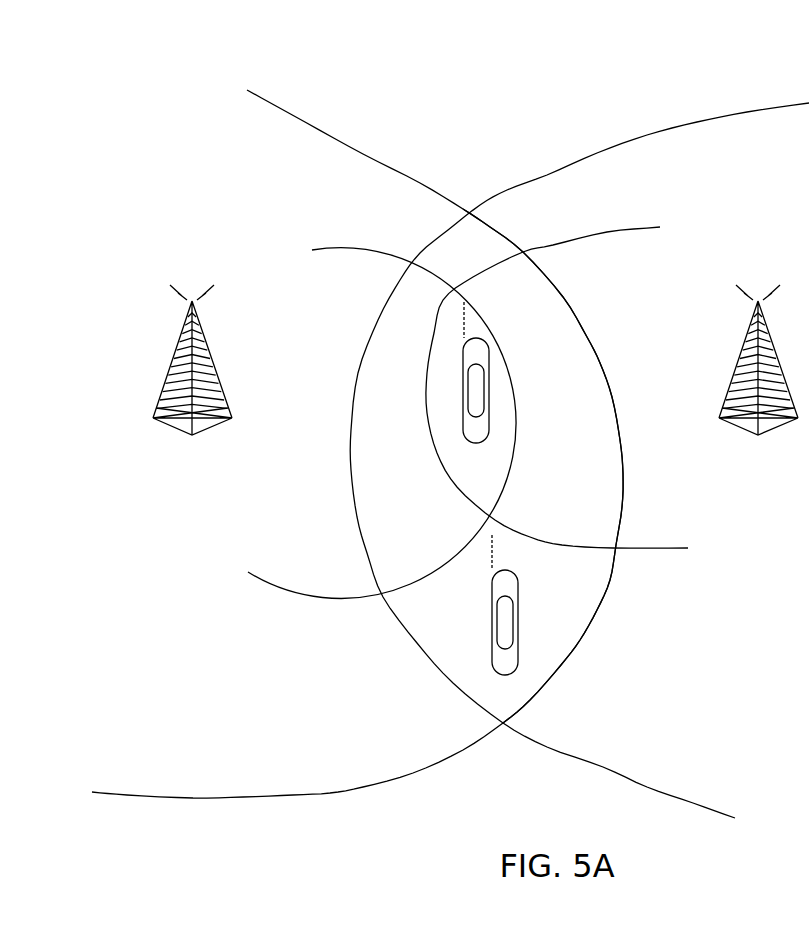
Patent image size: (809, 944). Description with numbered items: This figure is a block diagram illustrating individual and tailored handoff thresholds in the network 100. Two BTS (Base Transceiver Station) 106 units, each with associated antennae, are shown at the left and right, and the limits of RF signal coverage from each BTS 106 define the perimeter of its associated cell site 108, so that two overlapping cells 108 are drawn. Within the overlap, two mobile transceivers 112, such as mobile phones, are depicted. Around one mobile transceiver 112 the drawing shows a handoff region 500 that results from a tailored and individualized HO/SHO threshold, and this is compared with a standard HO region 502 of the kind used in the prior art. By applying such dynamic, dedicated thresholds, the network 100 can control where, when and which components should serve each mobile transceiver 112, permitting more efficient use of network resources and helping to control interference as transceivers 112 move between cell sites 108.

The network 100 is at (530, 103).
The BTS (Base Transceiver Station) 106 is at (475, 390).
The cell site 108 is at (266, 840).
The mobile transceiver 112 is at (457, 474).
The handoff region 500 is at (500, 330).
The standard HO region 502 is at (565, 293).